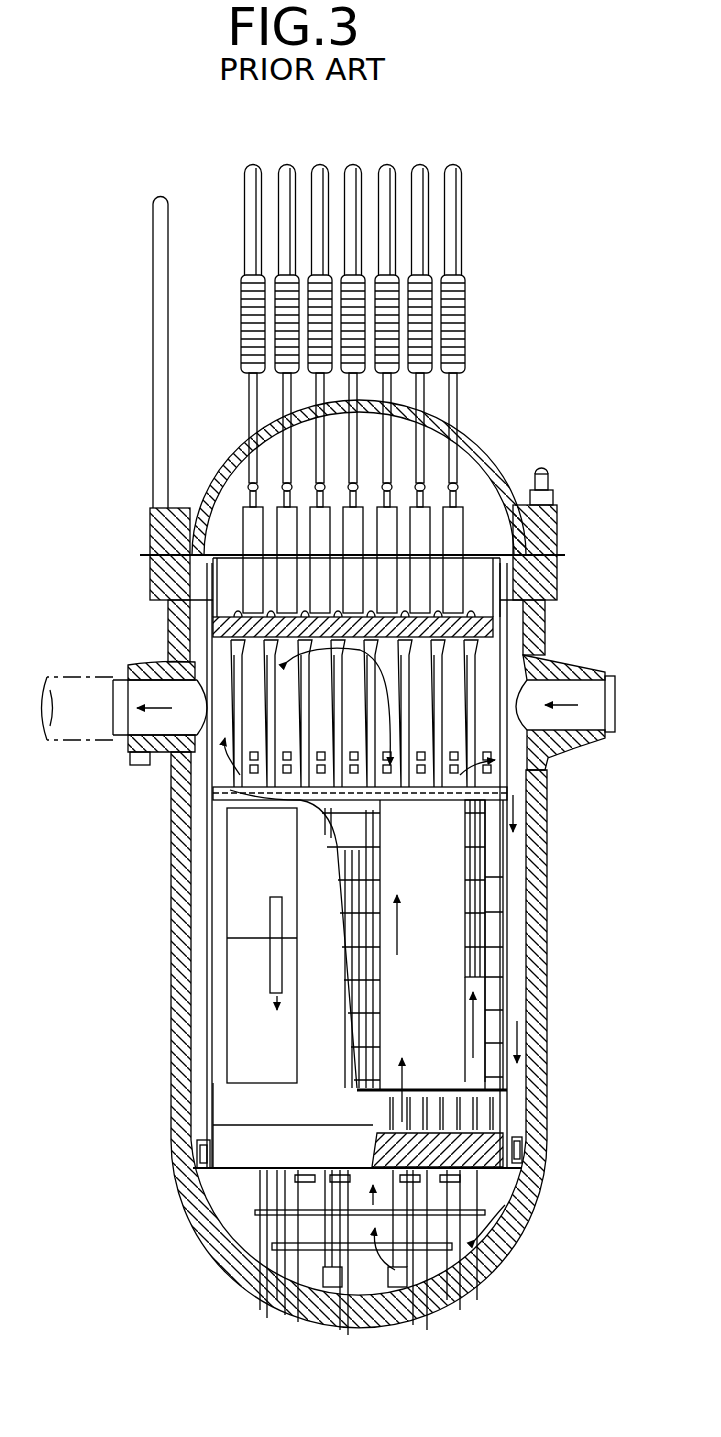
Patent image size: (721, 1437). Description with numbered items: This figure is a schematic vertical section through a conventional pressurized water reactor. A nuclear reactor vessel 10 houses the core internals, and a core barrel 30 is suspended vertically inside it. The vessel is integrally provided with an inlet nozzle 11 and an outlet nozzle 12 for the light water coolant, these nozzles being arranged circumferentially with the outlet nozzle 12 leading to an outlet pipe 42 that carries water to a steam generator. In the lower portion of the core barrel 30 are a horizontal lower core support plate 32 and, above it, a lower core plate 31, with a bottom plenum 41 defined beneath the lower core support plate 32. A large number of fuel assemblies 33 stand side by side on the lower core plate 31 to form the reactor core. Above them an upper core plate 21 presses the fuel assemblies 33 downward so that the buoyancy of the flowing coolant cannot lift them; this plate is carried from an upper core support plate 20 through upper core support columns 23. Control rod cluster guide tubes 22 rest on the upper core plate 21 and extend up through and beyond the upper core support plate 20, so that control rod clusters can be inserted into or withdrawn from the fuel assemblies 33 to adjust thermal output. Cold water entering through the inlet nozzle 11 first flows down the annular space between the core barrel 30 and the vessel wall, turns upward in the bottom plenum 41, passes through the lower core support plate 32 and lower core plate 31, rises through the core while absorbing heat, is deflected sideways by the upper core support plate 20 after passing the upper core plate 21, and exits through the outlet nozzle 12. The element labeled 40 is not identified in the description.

The nuclear reactor vessel 10 is at (172, 988).
The inlet nozzle 11 is at (600, 670).
The outlet nozzle 12 is at (138, 668).
The upper core support plate 20 is at (548, 545).
The upper core plate 21 is at (400, 797).
The control rod cluster guide tube 22 is at (508, 822).
The upper core support column 23 is at (505, 628).
The core barrel 30 is at (508, 864).
The lower core plate 31 is at (485, 1092).
The lower core support plate 32 is at (512, 1165).
The fuel assembly 33 is at (503, 957).
The control rod guide tubes 40 is at (490, 777).
The bottom plenum 41 is at (233, 1183).
The outlet pipe 42 is at (97, 742).